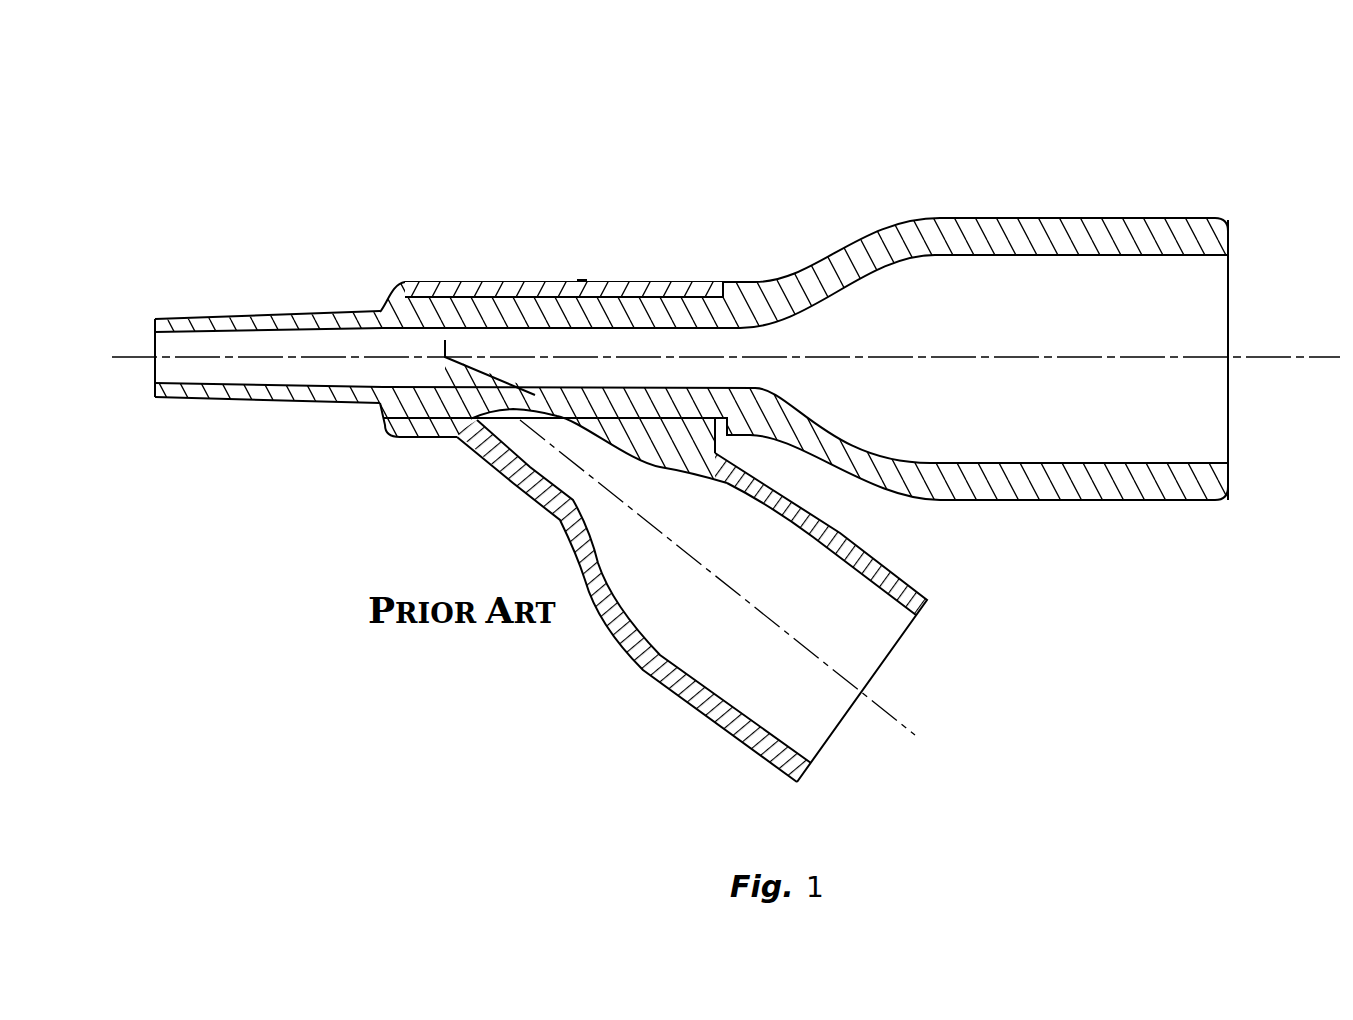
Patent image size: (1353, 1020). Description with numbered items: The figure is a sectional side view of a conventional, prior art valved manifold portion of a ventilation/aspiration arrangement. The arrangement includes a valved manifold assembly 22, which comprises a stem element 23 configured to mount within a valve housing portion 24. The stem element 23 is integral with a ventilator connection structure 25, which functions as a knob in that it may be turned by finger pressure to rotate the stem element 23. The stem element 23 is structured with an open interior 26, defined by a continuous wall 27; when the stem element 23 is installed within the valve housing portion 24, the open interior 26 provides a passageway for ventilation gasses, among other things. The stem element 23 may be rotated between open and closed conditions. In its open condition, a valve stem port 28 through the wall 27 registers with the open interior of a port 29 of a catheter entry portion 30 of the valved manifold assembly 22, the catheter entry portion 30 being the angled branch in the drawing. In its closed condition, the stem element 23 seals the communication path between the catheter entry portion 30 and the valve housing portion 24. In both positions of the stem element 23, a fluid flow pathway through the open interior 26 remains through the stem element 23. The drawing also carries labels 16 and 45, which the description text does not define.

The lower wall portion 16 is at (760, 372).
The valved manifold assembly 22 is at (642, 232).
The stem element 23 is at (442, 356).
The valve housing portion 24 is at (685, 283).
The ventilator connection structure 25 is at (882, 232).
The open interior 26 is at (171, 368).
The continuous wall 27 is at (462, 297).
The valve stem port 28 is at (465, 393).
The port 29 is at (507, 425).
The catheter entry portion 30 is at (930, 598).
The open end 45 is at (1228, 307).